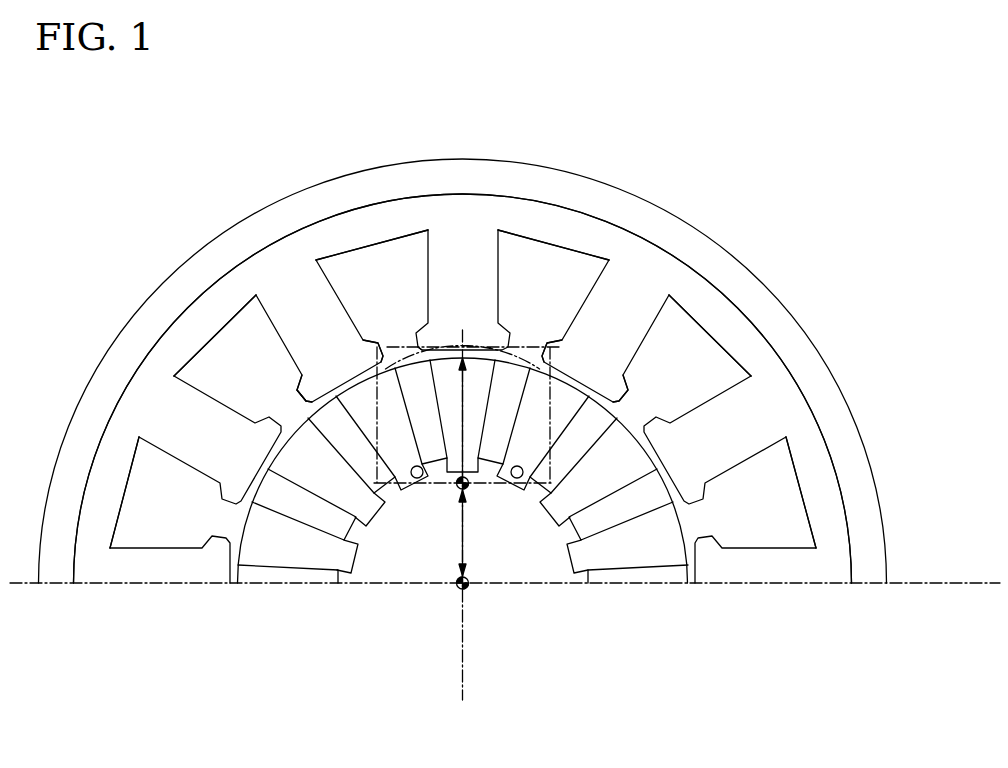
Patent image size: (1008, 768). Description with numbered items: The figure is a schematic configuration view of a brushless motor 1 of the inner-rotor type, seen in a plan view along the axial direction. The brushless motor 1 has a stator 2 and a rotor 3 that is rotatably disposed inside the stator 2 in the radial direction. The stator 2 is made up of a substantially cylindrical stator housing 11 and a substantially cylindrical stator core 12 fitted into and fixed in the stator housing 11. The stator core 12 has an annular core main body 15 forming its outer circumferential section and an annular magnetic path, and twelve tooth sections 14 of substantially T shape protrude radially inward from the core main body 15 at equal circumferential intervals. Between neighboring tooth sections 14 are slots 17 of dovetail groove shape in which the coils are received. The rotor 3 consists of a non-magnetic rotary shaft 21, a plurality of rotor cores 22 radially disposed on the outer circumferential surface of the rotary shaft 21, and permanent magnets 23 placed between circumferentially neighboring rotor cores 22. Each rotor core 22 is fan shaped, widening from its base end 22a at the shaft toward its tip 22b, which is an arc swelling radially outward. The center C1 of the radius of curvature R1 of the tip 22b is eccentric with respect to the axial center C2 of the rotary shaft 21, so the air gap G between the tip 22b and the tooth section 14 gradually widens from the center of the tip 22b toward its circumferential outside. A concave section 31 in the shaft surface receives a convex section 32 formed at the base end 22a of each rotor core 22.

The brushless motor 1 is at (650, 141).
The stator 2 is at (801, 305).
The rotor 3 is at (216, 518).
The stator housing 11 is at (463, 158).
The stator core 12 is at (289, 216).
The tooth section 14 is at (335, 252).
The core main body 15 is at (206, 300).
The slot 17 is at (418, 328).
The rotary shaft 21 is at (525, 590).
The rotor core 22 is at (354, 372).
The base end 22a is at (397, 465).
The tip 22b is at (378, 345).
The permanent magnet 23 is at (508, 348).
The concave section 31 is at (428, 478).
The convex section 32 is at (354, 585).
The air gap G is at (422, 345).
The region A is at (302, 388).
The center of radius of curvature C1 is at (468, 481).
The axial center C2 is at (464, 590).
The radius of curvature R1 is at (446, 420).